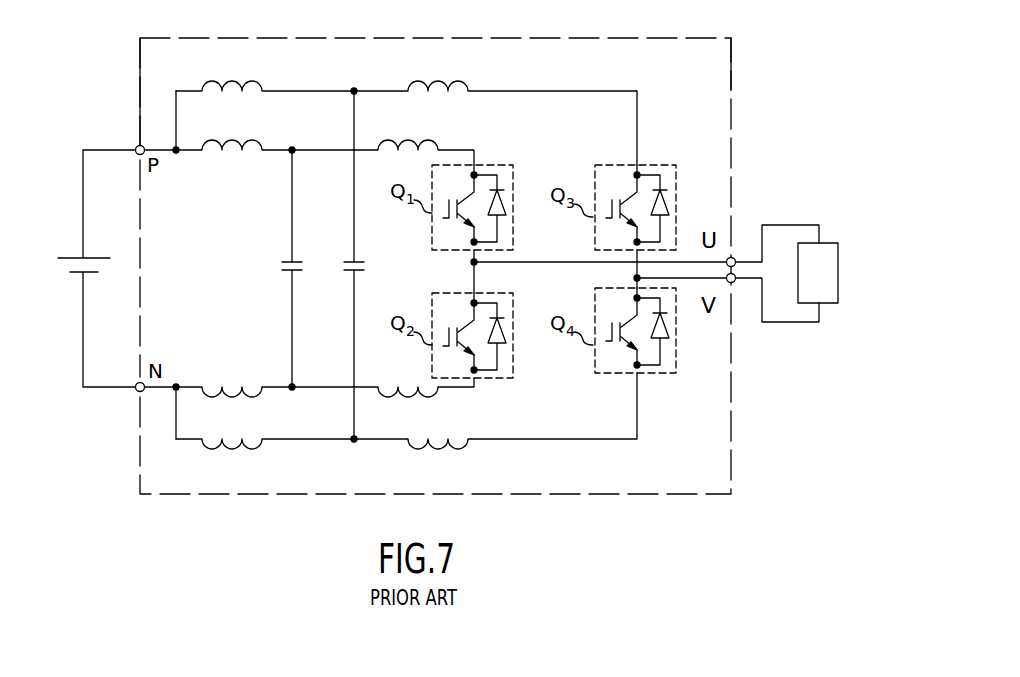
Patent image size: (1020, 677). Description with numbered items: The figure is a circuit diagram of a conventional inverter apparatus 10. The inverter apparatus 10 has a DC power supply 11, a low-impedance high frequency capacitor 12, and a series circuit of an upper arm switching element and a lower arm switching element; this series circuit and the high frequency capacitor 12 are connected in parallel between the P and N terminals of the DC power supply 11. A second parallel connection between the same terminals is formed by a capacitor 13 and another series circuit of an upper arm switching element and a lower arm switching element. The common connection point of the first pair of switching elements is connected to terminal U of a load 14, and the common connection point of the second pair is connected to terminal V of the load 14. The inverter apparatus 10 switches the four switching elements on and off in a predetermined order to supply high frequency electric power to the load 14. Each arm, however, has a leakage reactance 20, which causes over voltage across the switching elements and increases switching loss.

The inverter apparatus 10 is at (731, 94).
The DC power supply 11 is at (58, 266).
The high frequency capacitor 12 is at (280, 262).
The capacitor 13 is at (345, 262).
The load 14 is at (828, 243).
The leakage reactance 20 is at (258, 86).